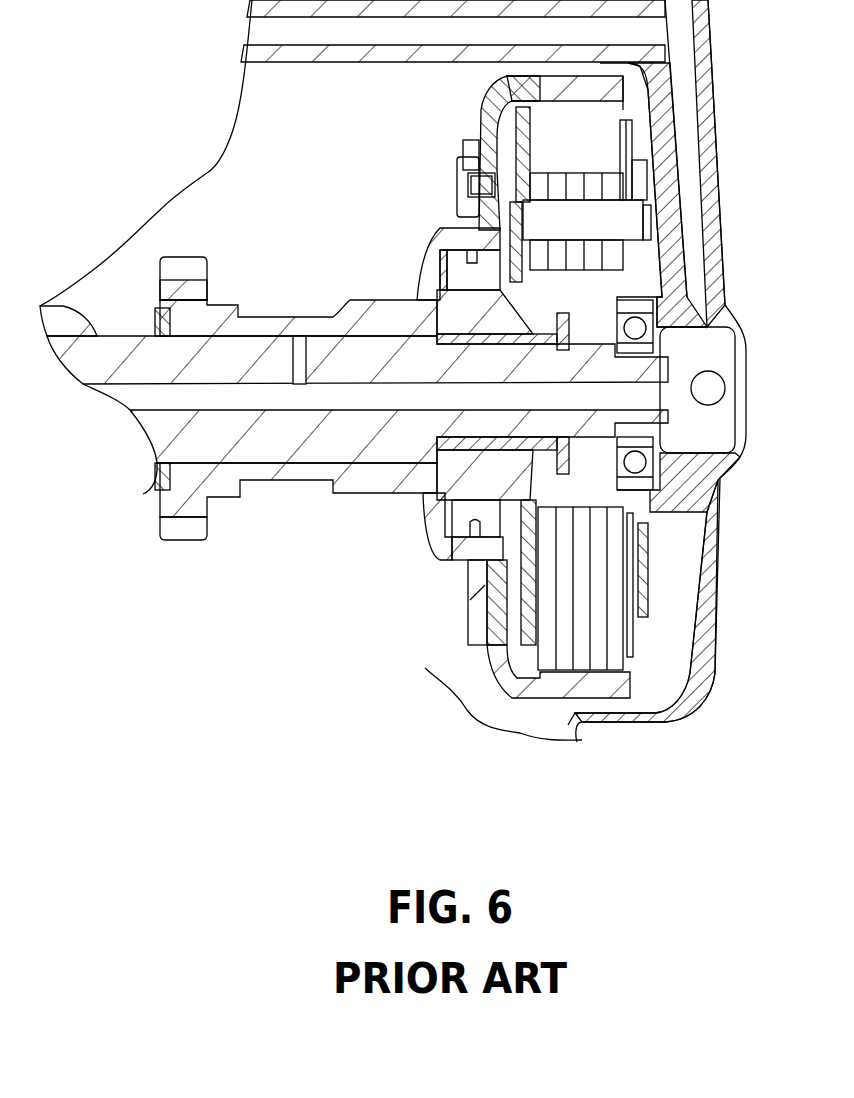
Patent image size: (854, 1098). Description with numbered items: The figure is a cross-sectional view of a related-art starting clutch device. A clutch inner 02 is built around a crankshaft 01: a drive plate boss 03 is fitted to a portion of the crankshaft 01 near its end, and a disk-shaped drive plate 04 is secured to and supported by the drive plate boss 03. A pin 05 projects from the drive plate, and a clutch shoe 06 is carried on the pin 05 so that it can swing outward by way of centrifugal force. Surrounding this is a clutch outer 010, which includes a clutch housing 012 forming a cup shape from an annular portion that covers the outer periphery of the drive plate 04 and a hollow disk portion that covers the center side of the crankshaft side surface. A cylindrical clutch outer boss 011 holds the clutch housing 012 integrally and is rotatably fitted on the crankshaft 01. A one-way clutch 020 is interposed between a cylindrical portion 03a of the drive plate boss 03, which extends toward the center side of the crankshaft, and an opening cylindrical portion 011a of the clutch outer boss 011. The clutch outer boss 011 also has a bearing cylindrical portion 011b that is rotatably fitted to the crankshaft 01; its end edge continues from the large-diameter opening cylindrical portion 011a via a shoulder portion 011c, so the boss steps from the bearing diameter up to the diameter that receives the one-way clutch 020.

The crankshaft 01 is at (278, 440).
The clutch outer boss 011 is at (353, 495).
The opening cylindrical portion 011a is at (445, 228).
The bearing cylindrical portion 011b is at (350, 318).
The shoulder portion 011c is at (440, 268).
The clutch housing 012 is at (500, 80).
The clutch outer 010 is at (452, 137).
The one-way clutch 020 is at (437, 250).
The clutch inner 02 is at (642, 145).
The drive plate boss 03 is at (421, 487).
The cylindrical portion 03a is at (515, 305).
The drive plate 04 is at (530, 137).
The pin 05 is at (628, 221).
The clutch shoe 06 is at (643, 183).